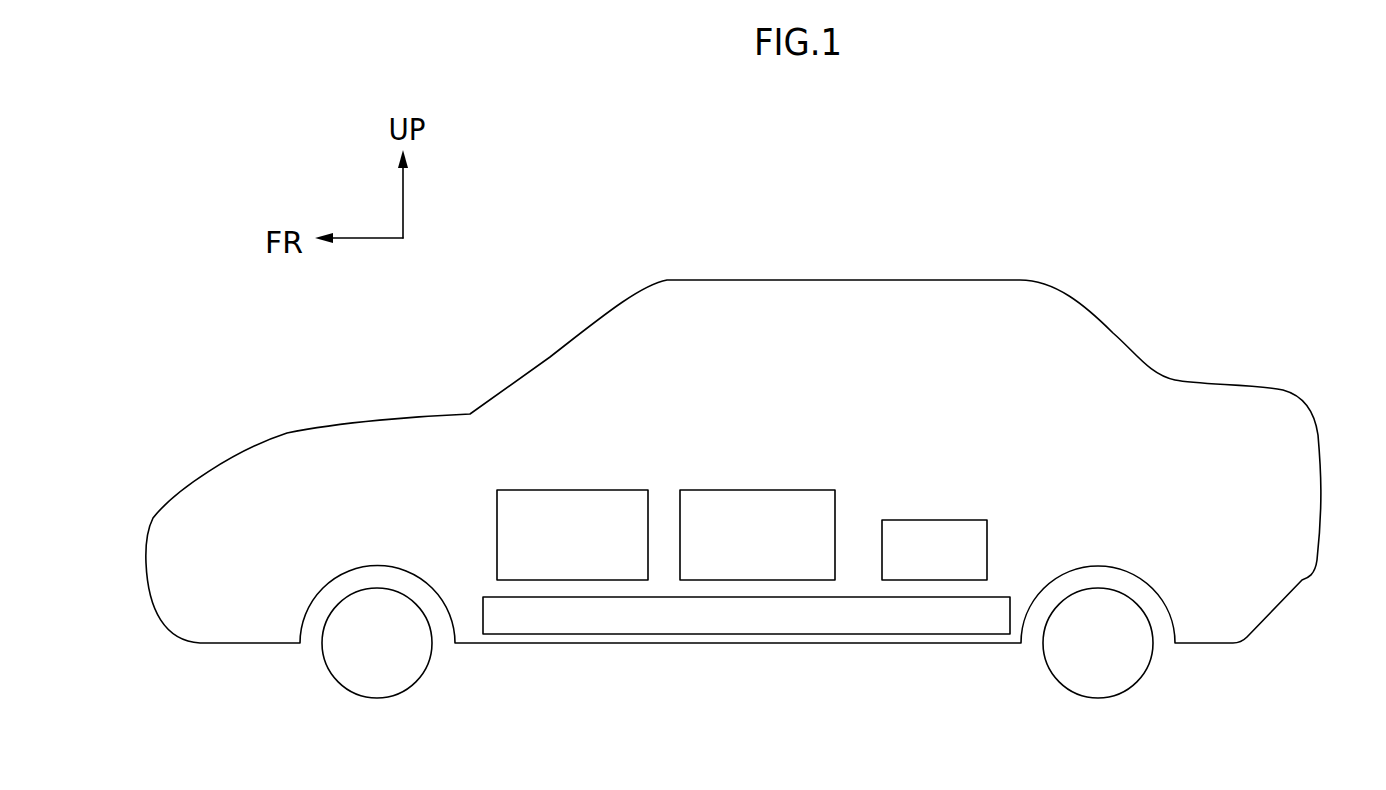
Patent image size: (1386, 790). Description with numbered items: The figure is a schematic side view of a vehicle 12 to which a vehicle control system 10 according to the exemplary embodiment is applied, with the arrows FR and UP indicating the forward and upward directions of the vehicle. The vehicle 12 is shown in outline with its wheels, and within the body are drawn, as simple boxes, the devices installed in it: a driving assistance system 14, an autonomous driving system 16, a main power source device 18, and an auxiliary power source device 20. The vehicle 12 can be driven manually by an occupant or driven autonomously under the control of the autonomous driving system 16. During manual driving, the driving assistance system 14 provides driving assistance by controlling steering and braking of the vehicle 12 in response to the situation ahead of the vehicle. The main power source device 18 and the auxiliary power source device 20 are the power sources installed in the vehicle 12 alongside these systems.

The vehicle control system 10 is at (733, 427).
The vehicle 12 is at (930, 236).
The driving assistance system 14 is at (568, 502).
The autonomous driving system 16 is at (760, 502).
The main power source device 18 is at (852, 627).
The auxiliary power source device 20 is at (928, 533).